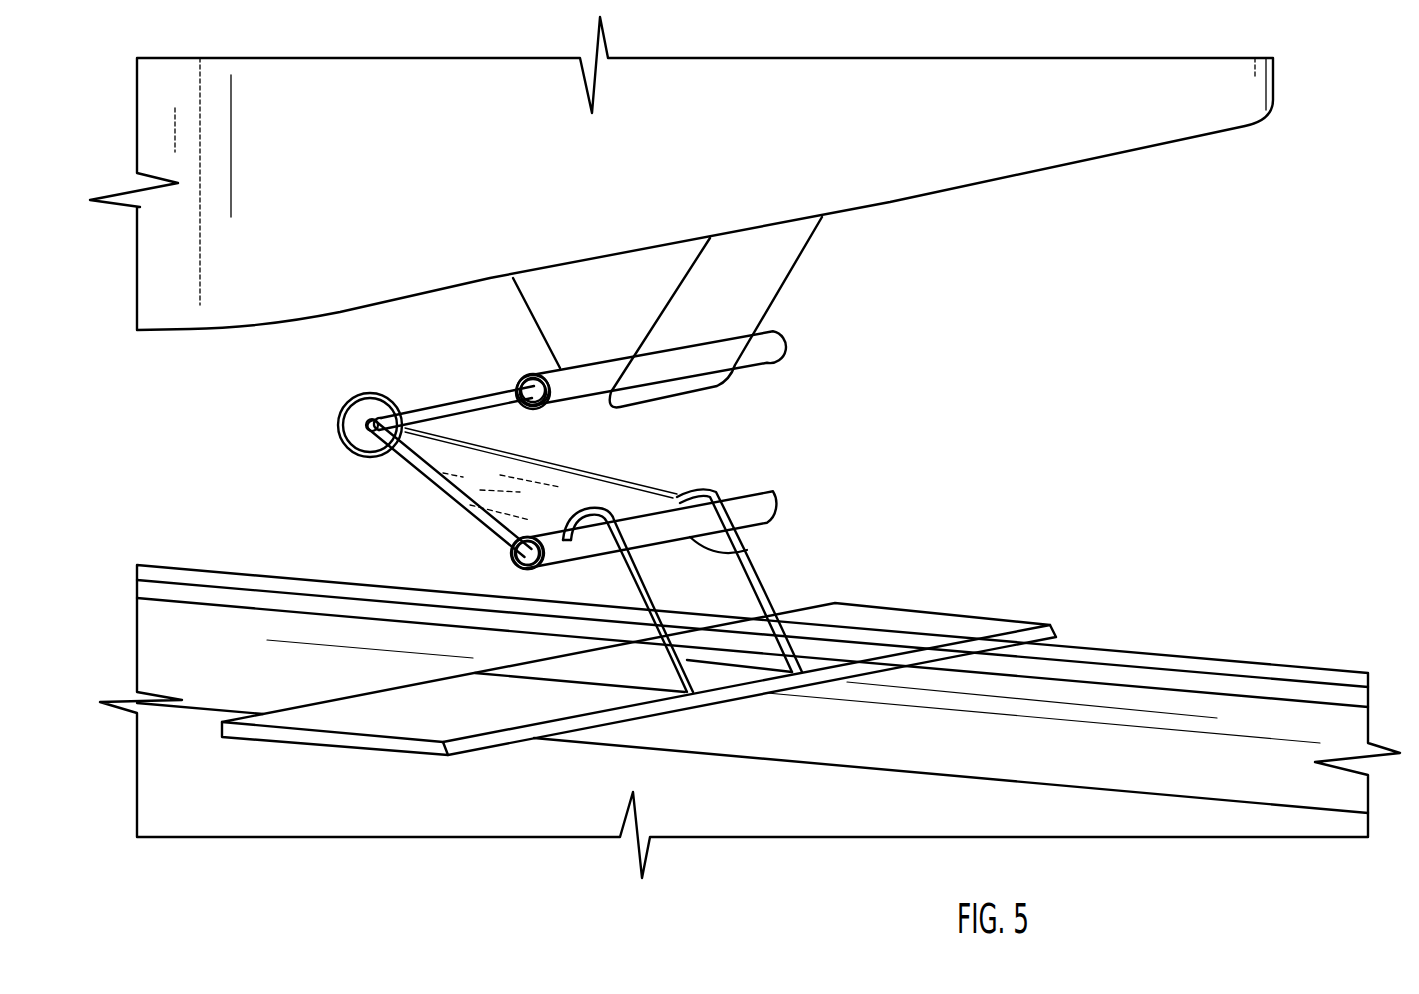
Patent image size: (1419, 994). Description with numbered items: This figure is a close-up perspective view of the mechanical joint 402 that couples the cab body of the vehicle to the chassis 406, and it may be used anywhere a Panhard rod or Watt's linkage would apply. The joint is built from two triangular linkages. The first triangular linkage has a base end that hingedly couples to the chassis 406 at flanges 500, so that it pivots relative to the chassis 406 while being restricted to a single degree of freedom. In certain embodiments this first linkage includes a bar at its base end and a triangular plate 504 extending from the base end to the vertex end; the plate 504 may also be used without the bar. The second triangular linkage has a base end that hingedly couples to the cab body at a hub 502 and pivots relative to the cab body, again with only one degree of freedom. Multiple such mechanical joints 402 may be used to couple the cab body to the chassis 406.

The mechanical joint 402 is at (320, 418).
The chassis 406 is at (1140, 652).
The flanges 500 is at (660, 620).
The hub 502 is at (767, 263).
The triangular plate 504 is at (507, 493).